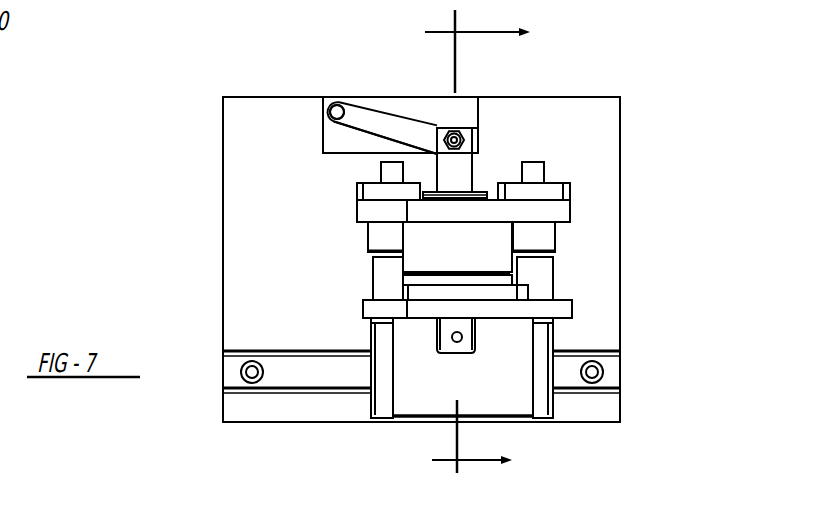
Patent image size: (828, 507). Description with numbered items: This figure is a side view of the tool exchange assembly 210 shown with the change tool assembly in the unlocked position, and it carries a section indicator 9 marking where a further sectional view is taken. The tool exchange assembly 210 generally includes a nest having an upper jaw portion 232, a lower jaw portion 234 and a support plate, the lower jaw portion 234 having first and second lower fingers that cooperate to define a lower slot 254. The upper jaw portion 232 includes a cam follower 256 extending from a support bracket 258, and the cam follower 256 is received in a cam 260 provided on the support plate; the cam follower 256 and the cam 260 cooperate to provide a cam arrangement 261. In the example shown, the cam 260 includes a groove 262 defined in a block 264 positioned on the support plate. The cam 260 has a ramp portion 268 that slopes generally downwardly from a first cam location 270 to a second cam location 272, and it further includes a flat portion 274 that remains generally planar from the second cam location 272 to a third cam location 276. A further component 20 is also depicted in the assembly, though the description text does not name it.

The lower slot 254 is at (115, 0).
The tool exchange assembly 210 is at (631, 197).
The block 264 is at (410, 104).
The cam 260 is at (338, 104).
The first cam location 270 is at (330, 116).
The groove 262 is at (377, 123).
The ramp portion 268 is at (397, 133).
The cam arrangement 261 is at (443, 120).
The support bracket 258 is at (461, 168).
The second cam location 272 is at (462, 124).
The flat portion 274 is at (484, 120).
The cam follower 256 is at (486, 122).
The third cam location 276 is at (480, 138).
The upper jaw portion 232 is at (560, 210).
The container 20 is at (486, 250).
The lower jaw portion 234 is at (555, 309).
The section line 9- 9 is at (494, 246).